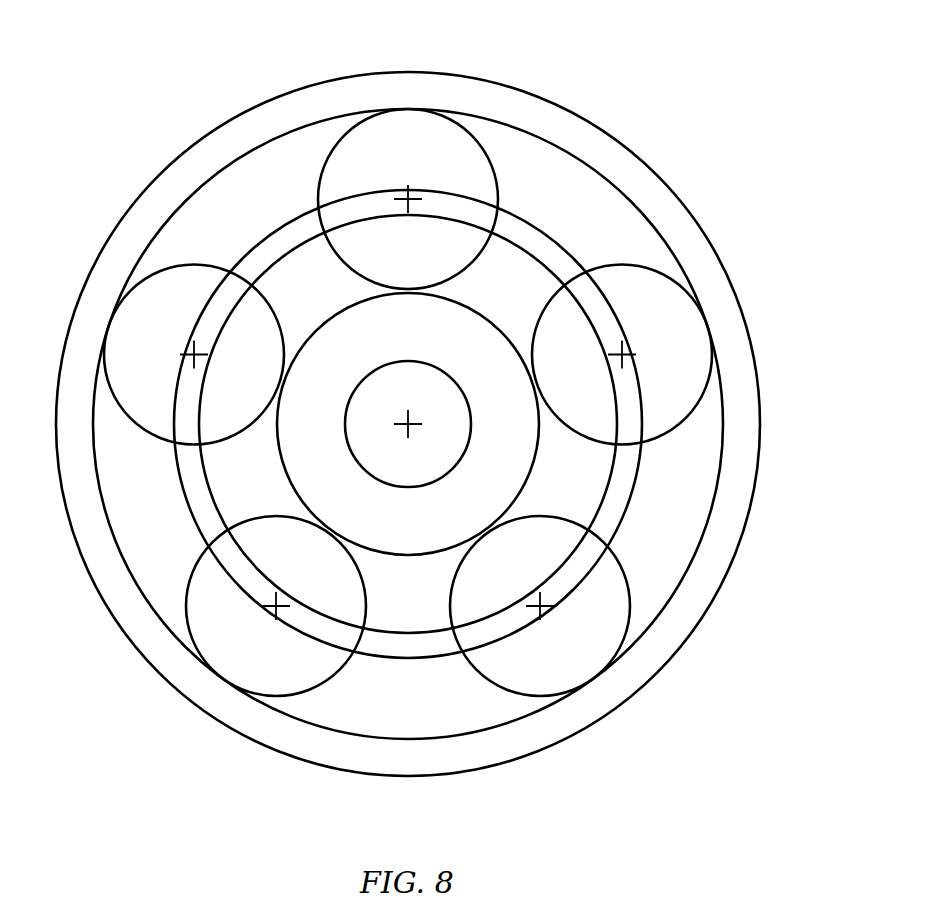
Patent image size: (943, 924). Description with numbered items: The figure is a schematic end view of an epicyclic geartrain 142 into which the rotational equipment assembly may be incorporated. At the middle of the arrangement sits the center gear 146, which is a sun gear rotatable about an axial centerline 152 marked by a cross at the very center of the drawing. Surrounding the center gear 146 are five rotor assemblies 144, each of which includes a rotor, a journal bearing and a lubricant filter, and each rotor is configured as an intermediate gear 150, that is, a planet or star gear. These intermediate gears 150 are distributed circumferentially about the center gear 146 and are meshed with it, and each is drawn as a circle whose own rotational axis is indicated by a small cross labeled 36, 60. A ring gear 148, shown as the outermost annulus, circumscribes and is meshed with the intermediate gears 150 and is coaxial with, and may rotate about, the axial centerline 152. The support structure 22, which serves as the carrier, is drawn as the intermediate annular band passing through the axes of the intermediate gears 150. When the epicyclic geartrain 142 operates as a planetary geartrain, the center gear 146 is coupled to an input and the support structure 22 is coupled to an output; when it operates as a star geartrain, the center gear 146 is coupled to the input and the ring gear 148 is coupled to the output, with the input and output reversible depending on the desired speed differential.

The epicyclic geartrain 142 is at (657, 82).
The ring gear 148 is at (242, 749).
The support structure 22 is at (386, 672).
The center gear 146 is at (546, 470).
The axial centerline 152 is at (408, 424).
The rotor assemblies 144 is at (436, 414).
The intermediate gear 150 is at (493, 157).
The rotation axis 36 is at (400, 393).
The rotation axis 60 is at (400, 198).